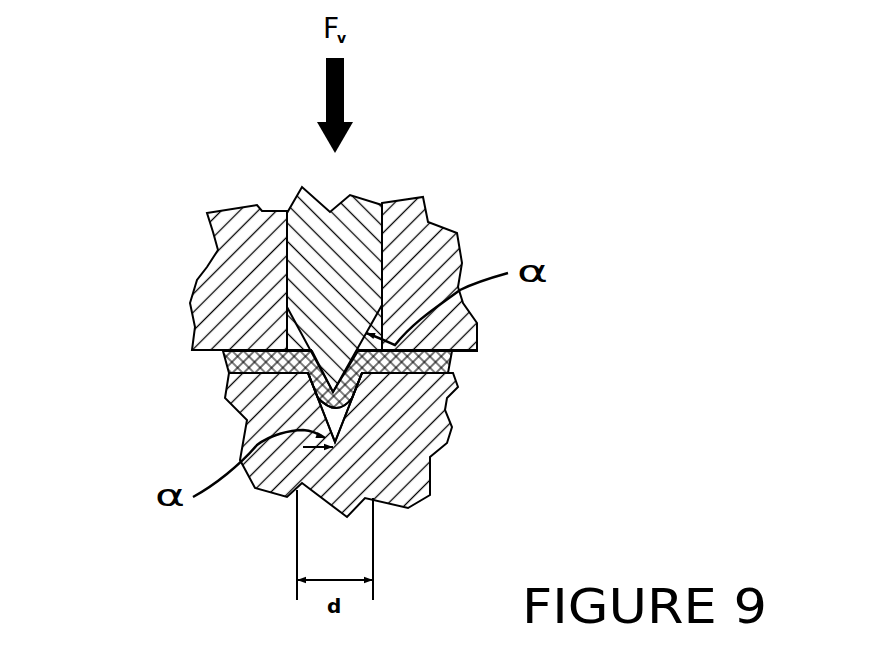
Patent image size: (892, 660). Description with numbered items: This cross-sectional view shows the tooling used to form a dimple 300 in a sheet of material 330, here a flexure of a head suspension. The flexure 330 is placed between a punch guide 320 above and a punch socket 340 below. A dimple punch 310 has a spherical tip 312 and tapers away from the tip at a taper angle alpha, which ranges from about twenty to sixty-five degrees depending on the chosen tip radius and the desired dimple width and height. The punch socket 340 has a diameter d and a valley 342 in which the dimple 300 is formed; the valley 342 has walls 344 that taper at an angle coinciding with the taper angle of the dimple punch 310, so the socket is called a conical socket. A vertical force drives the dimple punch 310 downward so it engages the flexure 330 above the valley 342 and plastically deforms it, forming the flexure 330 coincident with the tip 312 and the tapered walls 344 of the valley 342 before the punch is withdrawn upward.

The dimple 300 is at (328, 441).
The dimple punch 310 is at (367, 212).
The tip 312 is at (335, 387).
The punch guide 320 is at (235, 265).
The sheet of material 330 is at (448, 362).
The punch socket 340 is at (275, 478).
The valley 342 is at (340, 428).
The walls 344 is at (317, 392).